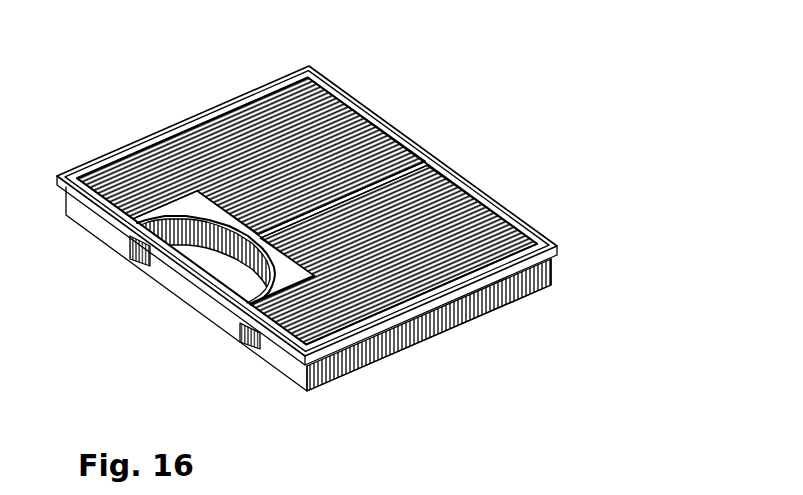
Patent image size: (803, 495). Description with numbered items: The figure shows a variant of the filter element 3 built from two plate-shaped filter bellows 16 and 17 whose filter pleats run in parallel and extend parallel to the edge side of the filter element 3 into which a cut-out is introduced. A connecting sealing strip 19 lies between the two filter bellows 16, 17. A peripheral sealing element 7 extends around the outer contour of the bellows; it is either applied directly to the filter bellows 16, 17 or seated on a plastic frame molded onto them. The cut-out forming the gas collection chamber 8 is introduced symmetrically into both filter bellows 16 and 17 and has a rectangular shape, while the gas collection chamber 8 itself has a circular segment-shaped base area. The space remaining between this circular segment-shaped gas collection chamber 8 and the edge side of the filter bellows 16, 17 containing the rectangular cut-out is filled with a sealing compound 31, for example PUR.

The filter element 3 is at (151, 106).
The sealing element 7 is at (72, 167).
The gas collection chamber 8 is at (197, 297).
The filter bellows 16 is at (325, 120).
The filter bellows 17 is at (455, 215).
The connecting sealing strip 19 is at (395, 163).
The sealing compound 31 is at (197, 208).